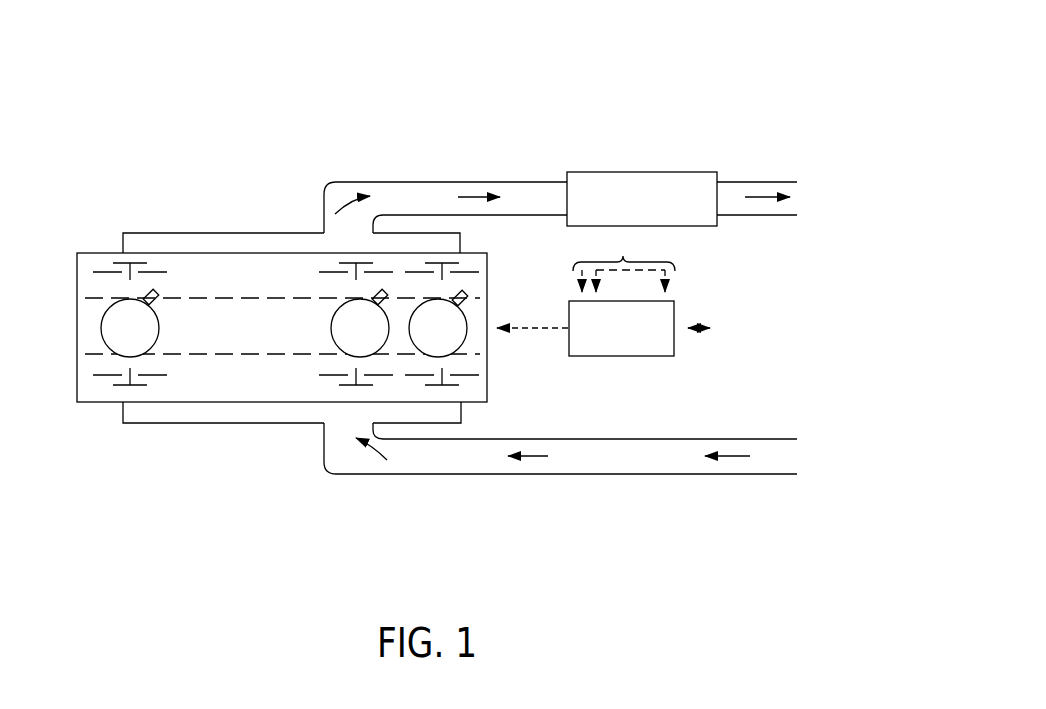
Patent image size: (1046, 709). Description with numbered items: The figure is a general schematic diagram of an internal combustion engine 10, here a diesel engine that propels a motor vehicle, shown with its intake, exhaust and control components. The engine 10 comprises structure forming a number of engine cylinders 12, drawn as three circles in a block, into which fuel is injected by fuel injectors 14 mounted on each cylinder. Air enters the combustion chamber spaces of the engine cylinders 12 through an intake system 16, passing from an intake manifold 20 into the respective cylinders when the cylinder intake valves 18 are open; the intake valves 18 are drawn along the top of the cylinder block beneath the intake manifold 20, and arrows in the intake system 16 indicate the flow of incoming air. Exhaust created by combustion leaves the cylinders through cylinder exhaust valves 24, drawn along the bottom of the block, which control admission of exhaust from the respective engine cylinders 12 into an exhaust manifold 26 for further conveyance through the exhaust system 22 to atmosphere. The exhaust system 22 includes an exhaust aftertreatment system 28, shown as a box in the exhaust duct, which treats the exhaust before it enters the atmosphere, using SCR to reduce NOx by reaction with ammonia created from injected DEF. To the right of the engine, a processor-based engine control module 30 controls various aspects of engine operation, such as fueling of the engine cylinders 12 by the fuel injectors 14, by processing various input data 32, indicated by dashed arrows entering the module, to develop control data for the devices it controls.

The internal combustion engine 10 is at (149, 86).
The engine cylinders 12 is at (331, 328).
The fuel injectors 14 is at (146, 295).
The intake system 16 is at (463, 474).
The cylinder intake valves 18 is at (340, 387).
The intake manifold 20 is at (133, 425).
The exhaust system 22 is at (426, 182).
The cylinder exhaust valves 24 is at (137, 263).
The exhaust manifold 26 is at (170, 233).
The exhaust aftertreatment system 28 is at (640, 172).
The engine control module 30 is at (676, 312).
The input data 32 is at (624, 264).